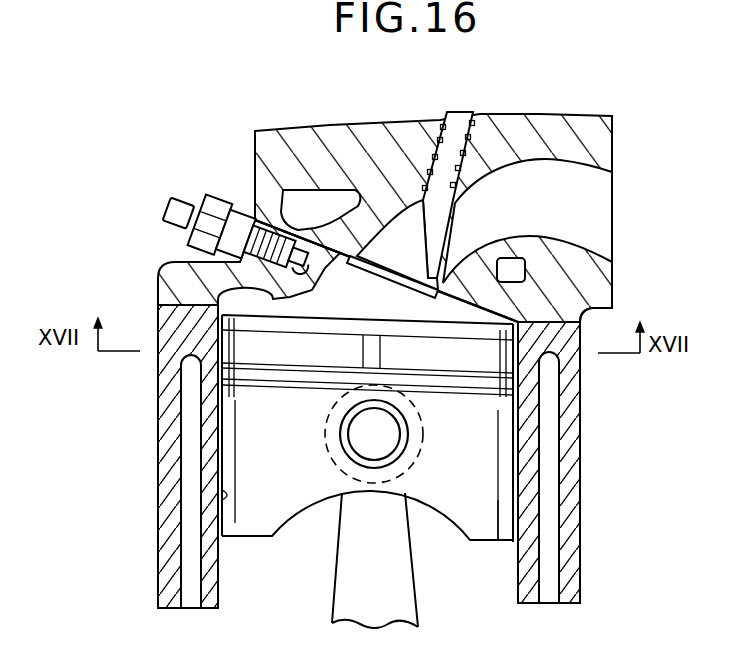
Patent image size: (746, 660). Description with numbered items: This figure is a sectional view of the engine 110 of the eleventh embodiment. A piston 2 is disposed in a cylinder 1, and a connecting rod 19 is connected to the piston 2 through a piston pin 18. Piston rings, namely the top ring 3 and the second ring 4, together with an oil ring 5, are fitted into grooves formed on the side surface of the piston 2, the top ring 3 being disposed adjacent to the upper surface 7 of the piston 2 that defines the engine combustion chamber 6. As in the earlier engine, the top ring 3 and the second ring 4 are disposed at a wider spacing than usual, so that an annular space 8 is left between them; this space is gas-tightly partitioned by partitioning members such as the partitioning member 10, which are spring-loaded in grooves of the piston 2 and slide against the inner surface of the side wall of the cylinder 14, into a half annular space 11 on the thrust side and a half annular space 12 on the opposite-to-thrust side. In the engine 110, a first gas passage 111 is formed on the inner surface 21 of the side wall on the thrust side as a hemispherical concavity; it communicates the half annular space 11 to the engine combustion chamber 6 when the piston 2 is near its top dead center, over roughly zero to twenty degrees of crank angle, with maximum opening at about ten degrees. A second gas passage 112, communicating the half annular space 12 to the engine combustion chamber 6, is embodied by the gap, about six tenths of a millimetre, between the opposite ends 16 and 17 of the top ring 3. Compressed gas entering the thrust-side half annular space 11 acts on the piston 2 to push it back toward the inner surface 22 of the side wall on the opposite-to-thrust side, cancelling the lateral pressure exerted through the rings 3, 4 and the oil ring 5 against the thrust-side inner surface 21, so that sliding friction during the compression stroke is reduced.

The cylinder 1 is at (165, 480).
The piston 2 is at (520, 465).
The top ring 3 is at (168, 262).
The second ring 4 is at (158, 360).
The oil ring 5 is at (160, 436).
The engine combustion chamber 6 is at (613, 270).
The upper surface 7 is at (327, 318).
The annular space 8 is at (523, 430).
The partitioning member 10 is at (380, 353).
The half annular space on the thrust side 11 is at (580, 385).
The half annular space on the opposite-to-thrust side 12 is at (158, 400).
The side wall of the cylinder 14 is at (514, 503).
The end of the piston ring 16 is at (250, 318).
The end of the piston ring 17 is at (162, 308).
The piston pin 18 is at (360, 443).
The connecting rod 19 is at (407, 587).
The inner surface of the side wall of the cylinder on the thrust side 21 is at (520, 567).
The inner surface of the side wall of the cylinder on the opposite-to-thrust side 22 is at (160, 512).
The engine 110 is at (128, 552).
The first gas passage 111 is at (580, 330).
The second gas passage 112 is at (231, 340).